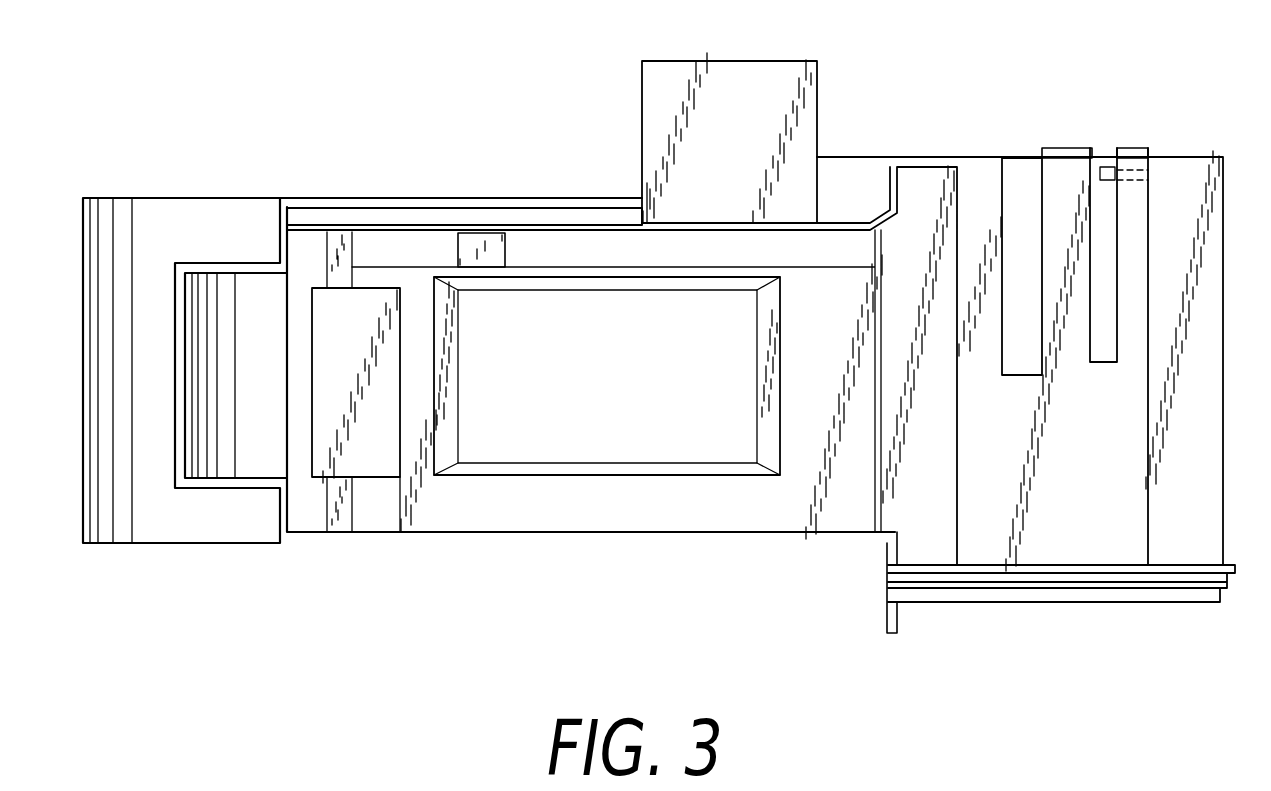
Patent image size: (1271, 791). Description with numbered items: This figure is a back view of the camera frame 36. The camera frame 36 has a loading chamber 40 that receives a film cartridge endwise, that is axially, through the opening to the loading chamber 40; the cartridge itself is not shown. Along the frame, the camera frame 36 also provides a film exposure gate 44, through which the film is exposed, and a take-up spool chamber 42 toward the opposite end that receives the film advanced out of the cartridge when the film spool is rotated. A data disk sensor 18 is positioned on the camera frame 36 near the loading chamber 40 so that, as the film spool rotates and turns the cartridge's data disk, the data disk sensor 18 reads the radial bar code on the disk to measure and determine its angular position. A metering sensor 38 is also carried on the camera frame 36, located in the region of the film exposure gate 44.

The camera frame 36 is at (437, 112).
The take-up spool chamber 42 is at (230, 197).
The film exposure gate 44 is at (620, 318).
The metering sensor 38 is at (505, 248).
The data disk sensor 18 is at (1110, 167).
The loading chamber 40 is at (1092, 605).